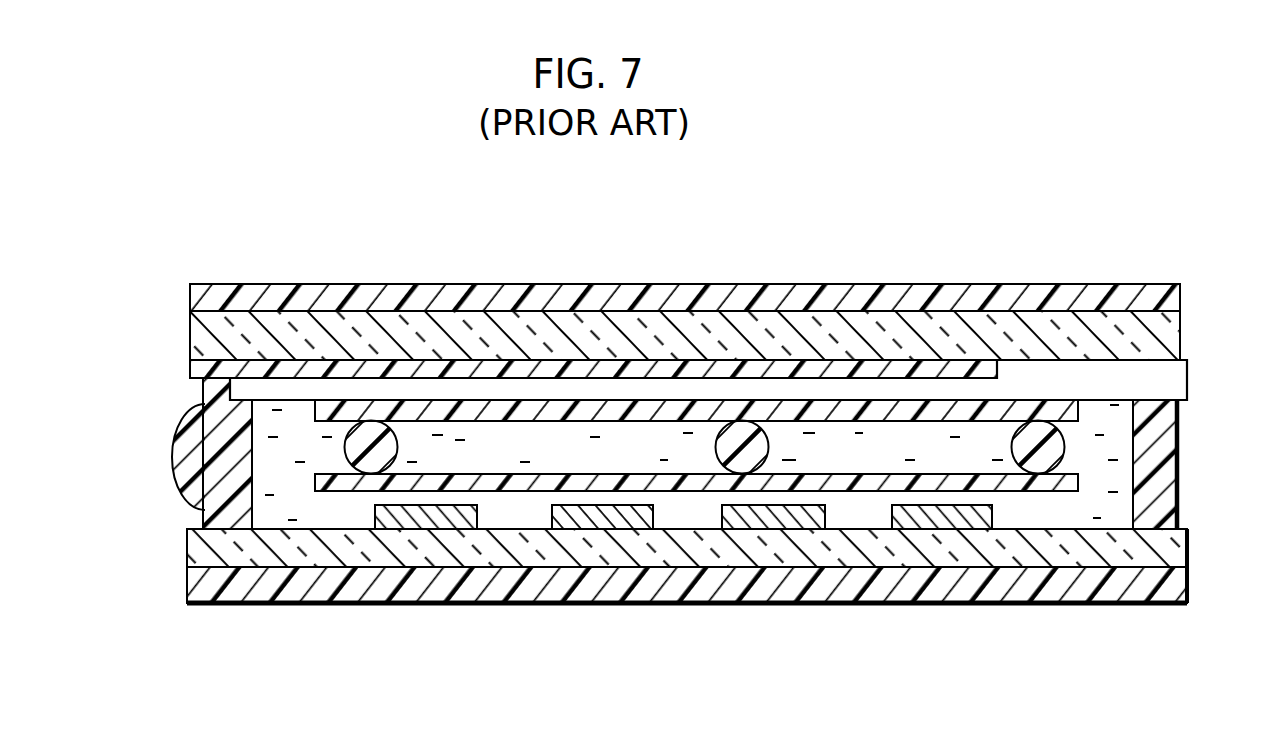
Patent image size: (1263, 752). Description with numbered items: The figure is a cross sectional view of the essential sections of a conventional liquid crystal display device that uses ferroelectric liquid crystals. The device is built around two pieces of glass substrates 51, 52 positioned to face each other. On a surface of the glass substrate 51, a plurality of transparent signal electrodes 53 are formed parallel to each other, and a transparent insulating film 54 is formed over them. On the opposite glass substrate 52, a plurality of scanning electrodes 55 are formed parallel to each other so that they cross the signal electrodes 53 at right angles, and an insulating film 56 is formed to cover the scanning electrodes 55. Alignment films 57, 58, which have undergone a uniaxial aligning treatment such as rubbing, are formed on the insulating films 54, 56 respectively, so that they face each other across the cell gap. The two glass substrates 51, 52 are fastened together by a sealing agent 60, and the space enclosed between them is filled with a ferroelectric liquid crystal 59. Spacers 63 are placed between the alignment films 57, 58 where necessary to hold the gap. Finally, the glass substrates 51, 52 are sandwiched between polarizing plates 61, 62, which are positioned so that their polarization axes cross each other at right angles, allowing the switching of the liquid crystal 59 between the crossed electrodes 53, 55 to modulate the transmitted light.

The glass substrate 51 is at (1175, 548).
The glass substrate 52 is at (1172, 328).
The transparent signal electrodes 53 is at (437, 520).
The transparent insulating film 54 is at (1035, 513).
The scanning electrodes 55 is at (968, 368).
The insulating film 56 is at (1180, 382).
The alignment film 57 is at (1080, 413).
The alignment film 58 is at (1080, 473).
The liquid crystal 59 is at (1112, 512).
The sealing agent 60 is at (230, 520).
The polarizing plate 61 is at (1182, 597).
The polarizing plate 62 is at (1073, 296).
The spacers 63 is at (373, 442).